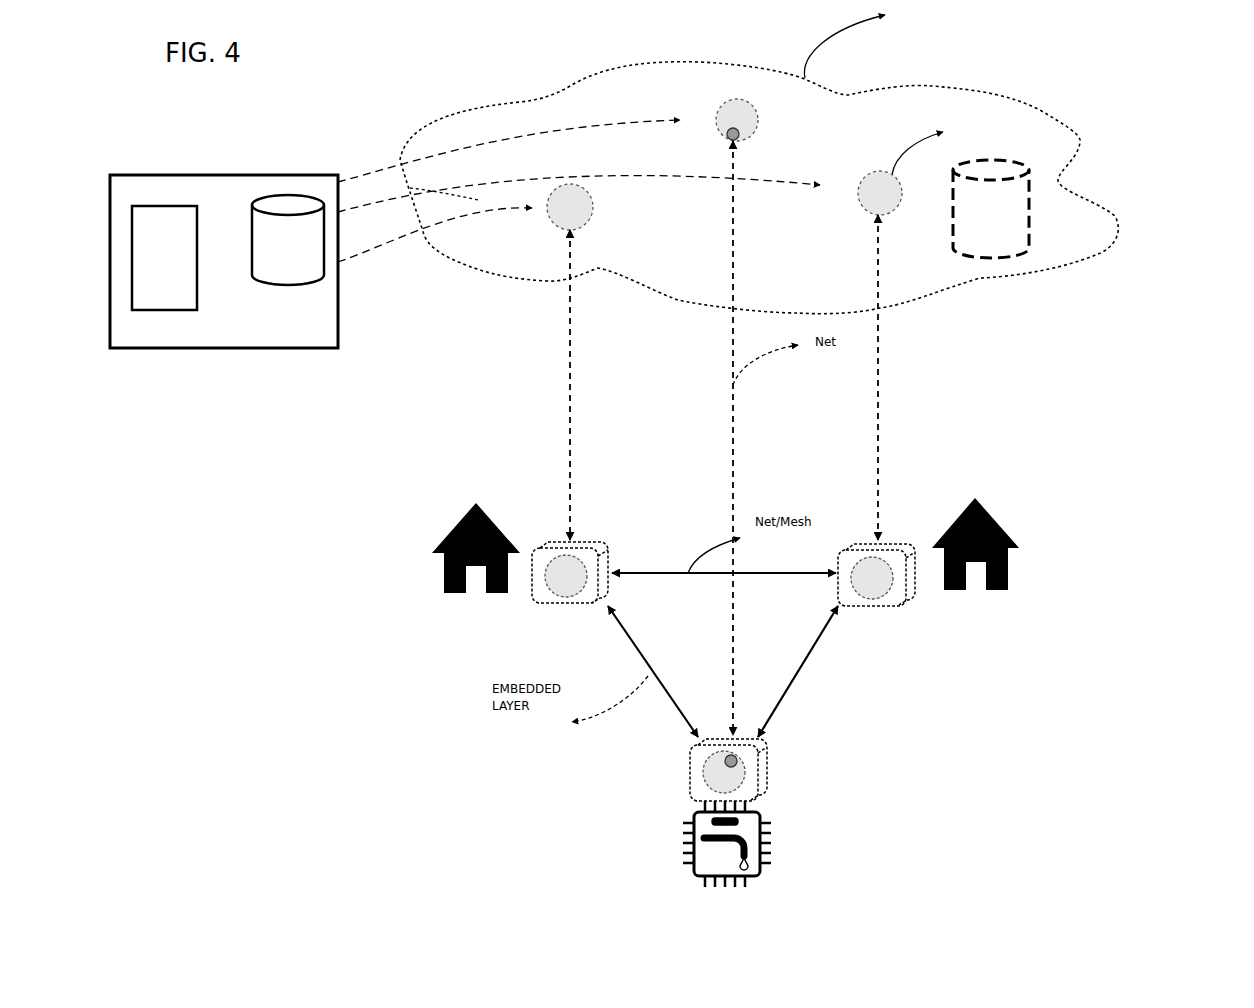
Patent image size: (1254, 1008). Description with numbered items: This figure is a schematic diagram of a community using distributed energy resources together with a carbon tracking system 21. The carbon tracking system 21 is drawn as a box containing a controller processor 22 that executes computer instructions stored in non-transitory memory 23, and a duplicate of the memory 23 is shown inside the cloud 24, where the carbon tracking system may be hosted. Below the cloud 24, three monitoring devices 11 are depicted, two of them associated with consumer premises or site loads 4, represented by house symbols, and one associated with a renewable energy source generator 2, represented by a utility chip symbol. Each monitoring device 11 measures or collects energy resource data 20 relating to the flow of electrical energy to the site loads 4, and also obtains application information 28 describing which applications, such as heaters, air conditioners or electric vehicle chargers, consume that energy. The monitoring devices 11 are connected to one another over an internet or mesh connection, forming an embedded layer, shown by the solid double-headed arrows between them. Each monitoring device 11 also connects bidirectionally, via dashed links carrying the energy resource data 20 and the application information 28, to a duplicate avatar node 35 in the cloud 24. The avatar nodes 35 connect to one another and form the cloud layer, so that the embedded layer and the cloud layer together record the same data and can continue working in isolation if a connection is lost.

The renewable energy source generator 2 is at (763, 876).
The site load 4 is at (447, 530).
The monitoring device 11 is at (583, 541).
The energy resource data 20 is at (570, 353).
The carbon tracking system 21 is at (569, 187).
The controller processor 22 is at (175, 267).
The non-transitory memory 23 is at (300, 249).
The cloud 24 is at (1108, 217).
The application information 28 is at (733, 340).
The avatar node 35 is at (557, 585).